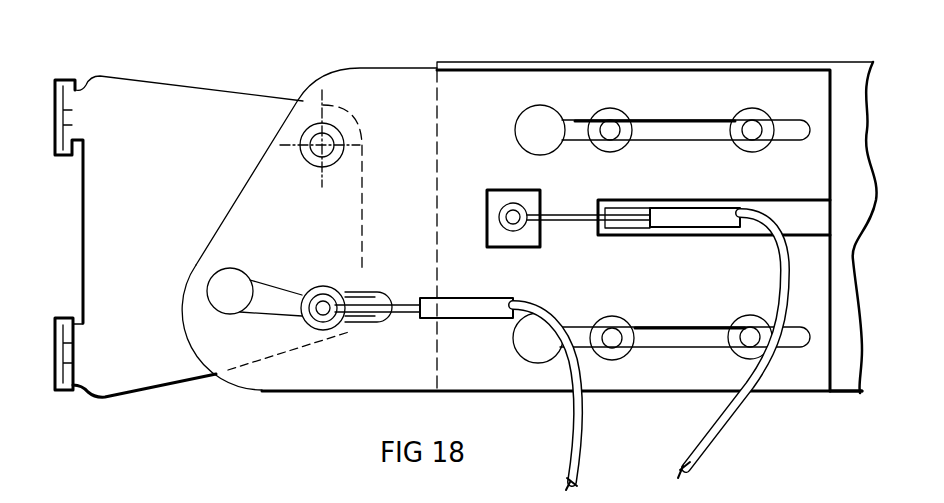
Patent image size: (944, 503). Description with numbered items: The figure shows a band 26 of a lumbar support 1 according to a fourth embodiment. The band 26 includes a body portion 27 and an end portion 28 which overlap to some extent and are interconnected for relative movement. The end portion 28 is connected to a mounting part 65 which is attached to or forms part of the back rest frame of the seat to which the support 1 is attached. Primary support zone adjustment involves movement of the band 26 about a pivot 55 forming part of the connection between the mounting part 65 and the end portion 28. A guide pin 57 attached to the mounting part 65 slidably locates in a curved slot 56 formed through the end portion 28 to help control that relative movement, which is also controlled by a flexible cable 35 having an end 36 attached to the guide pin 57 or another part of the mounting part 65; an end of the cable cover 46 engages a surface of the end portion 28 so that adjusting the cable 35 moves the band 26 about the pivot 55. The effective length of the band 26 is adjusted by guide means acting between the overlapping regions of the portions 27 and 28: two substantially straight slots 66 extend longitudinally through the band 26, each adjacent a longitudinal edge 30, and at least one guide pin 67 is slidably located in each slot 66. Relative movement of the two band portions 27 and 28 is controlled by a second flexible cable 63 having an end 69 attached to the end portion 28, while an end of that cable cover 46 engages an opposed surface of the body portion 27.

The support 1 is at (522, 45).
The band 26 is at (594, 57).
The body portion 27 is at (848, 85).
The end portion 28 is at (386, 110).
The longitudinal edge 30 is at (770, 60).
The flexible cable 35 is at (563, 454).
The cable end 36 is at (323, 322).
The cable cover 46 is at (575, 420).
The pivot 55 is at (313, 140).
The curved slot 56 is at (268, 302).
The guide pin 57 is at (290, 318).
The flexible cable 63 is at (714, 446).
The mounting part 65 is at (165, 113).
The slots 66 is at (692, 127).
The guide pin 67 is at (614, 135).
The cable end 69 is at (513, 205).